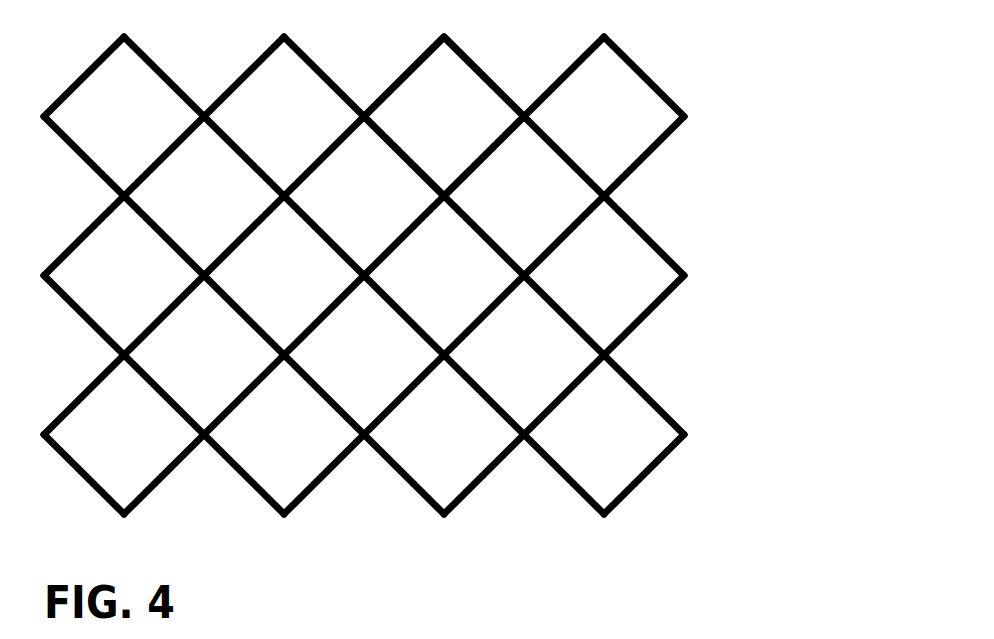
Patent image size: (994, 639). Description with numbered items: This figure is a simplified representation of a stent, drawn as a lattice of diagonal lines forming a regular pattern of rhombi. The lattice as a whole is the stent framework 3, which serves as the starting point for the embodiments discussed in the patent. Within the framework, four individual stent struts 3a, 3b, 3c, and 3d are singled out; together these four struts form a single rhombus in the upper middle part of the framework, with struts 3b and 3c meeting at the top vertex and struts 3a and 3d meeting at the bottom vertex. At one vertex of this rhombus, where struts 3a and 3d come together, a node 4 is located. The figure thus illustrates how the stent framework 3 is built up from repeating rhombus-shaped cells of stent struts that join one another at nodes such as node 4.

The stent framework 3 is at (434, 275).
The stent strut 3a is at (380, 159).
The stent strut 3b is at (380, 62).
The stent strut 3c is at (514, 62).
The stent strut 3d is at (507, 161).
The node 4 is at (415, 150).